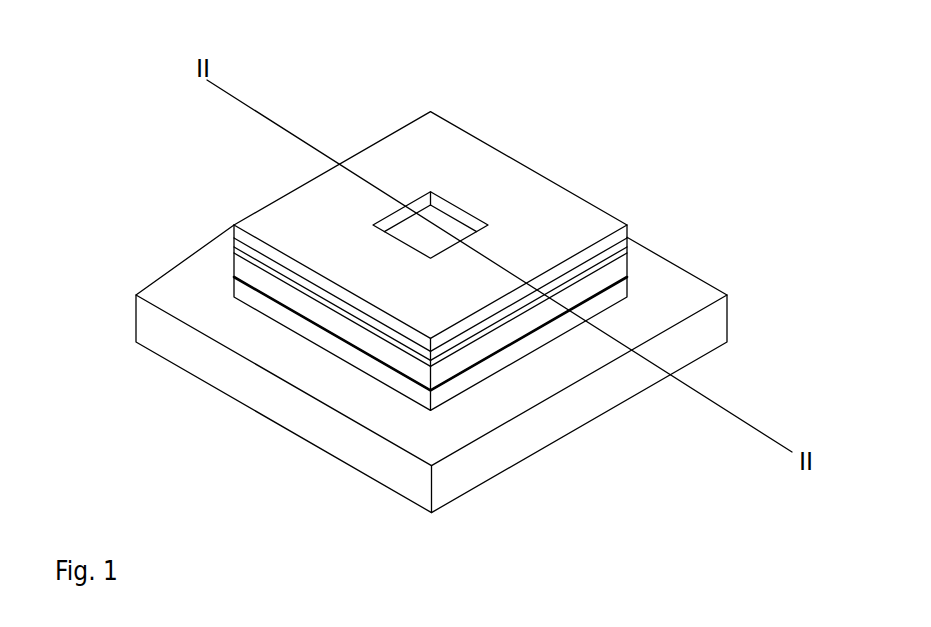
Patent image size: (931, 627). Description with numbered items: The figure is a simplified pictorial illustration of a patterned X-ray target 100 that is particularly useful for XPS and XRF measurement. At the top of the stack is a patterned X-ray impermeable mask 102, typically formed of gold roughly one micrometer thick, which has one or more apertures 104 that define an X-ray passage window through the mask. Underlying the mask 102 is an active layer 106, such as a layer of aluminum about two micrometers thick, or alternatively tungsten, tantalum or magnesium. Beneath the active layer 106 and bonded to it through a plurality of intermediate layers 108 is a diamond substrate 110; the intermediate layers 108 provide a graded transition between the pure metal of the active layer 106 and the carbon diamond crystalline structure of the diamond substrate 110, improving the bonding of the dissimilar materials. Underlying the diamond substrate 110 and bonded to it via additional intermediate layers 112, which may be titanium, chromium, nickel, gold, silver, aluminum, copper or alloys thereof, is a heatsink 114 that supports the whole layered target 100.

The patterned X-ray target 100 is at (220, 177).
The patterned X-ray impermeable mask 102 is at (566, 193).
The aperture 104 is at (437, 228).
The active layer 106 is at (618, 233).
The intermediate layers 108 is at (240, 242).
The diamond substrate 110 is at (617, 262).
The intermediate layers 112 is at (255, 290).
The heatsink 114 is at (552, 413).